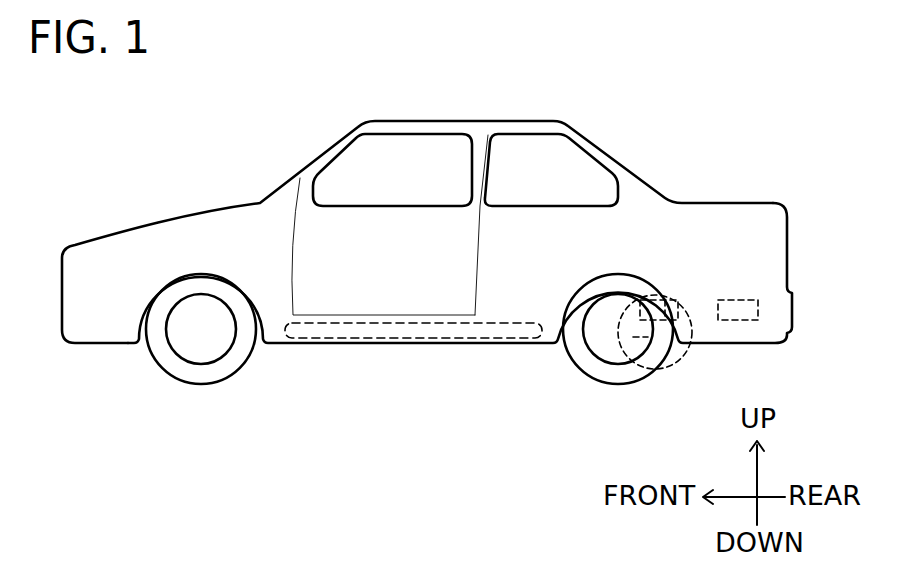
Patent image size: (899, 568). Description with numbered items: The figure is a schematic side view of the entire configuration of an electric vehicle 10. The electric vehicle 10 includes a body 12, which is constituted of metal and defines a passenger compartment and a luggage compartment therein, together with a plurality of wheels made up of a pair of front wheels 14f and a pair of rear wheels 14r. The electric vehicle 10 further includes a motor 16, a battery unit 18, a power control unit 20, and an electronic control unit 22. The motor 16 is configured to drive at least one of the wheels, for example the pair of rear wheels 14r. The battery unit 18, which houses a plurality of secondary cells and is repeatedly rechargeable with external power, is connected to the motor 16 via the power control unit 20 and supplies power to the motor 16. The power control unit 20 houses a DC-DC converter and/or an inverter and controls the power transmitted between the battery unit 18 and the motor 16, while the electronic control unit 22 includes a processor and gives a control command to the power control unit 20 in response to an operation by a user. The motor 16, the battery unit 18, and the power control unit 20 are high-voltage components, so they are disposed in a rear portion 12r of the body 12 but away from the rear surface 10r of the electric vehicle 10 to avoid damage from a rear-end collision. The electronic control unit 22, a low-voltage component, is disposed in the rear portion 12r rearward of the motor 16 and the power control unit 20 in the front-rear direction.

The electric vehicle 10 is at (752, 84).
The rear surface 10r is at (788, 274).
The body 12 is at (510, 130).
The rear portion 12r is at (707, 190).
The front wheels 14f is at (170, 362).
The rear wheels 14r is at (580, 365).
The motor 16 is at (650, 338).
The battery unit 18 is at (352, 340).
The power control unit 20 is at (683, 340).
The electronic control unit 22 is at (758, 318).